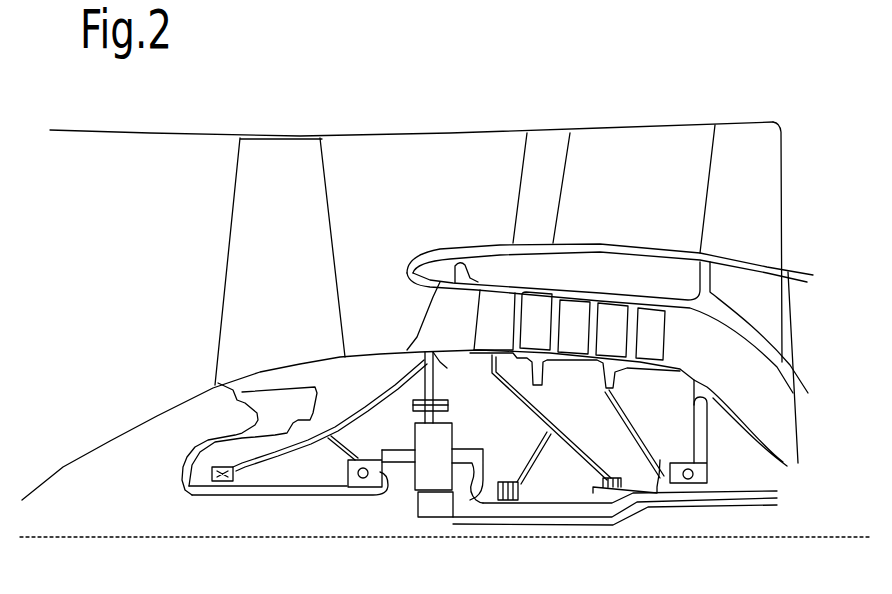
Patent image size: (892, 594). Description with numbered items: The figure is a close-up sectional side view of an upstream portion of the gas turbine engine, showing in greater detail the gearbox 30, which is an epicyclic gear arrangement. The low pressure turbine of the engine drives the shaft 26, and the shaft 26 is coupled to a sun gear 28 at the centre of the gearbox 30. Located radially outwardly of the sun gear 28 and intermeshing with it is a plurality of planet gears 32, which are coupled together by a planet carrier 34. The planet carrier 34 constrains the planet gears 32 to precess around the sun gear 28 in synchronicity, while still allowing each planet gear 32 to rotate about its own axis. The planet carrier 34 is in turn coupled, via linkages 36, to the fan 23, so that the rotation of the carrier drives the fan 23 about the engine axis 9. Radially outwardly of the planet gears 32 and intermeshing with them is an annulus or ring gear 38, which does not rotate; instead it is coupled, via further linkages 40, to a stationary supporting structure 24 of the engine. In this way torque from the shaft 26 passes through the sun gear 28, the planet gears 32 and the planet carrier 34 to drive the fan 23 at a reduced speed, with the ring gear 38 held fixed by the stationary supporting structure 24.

The engine axis 9 is at (195, 539).
The fan 23 is at (251, 297).
The stationary supporting structure 24 is at (441, 316).
The shaft 26 is at (670, 497).
The sun gear 28 is at (433, 508).
The gearbox 30 is at (420, 478).
The planet gears 32 is at (410, 498).
The planet carrier 34 is at (487, 505).
The linkages 36 is at (388, 490).
The ring gear 38 is at (415, 414).
The linkages 40 is at (440, 362).